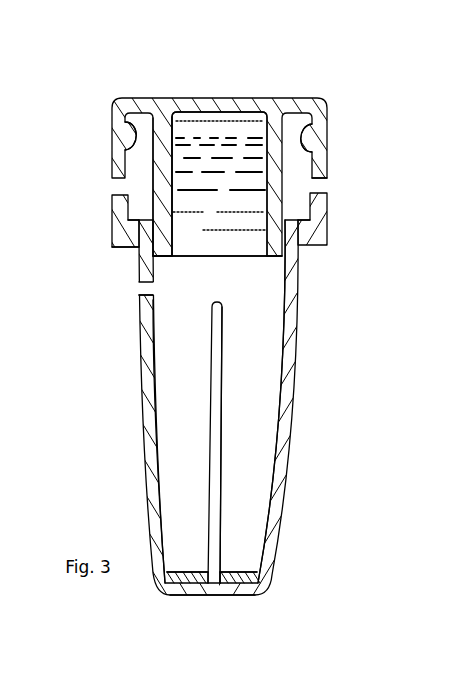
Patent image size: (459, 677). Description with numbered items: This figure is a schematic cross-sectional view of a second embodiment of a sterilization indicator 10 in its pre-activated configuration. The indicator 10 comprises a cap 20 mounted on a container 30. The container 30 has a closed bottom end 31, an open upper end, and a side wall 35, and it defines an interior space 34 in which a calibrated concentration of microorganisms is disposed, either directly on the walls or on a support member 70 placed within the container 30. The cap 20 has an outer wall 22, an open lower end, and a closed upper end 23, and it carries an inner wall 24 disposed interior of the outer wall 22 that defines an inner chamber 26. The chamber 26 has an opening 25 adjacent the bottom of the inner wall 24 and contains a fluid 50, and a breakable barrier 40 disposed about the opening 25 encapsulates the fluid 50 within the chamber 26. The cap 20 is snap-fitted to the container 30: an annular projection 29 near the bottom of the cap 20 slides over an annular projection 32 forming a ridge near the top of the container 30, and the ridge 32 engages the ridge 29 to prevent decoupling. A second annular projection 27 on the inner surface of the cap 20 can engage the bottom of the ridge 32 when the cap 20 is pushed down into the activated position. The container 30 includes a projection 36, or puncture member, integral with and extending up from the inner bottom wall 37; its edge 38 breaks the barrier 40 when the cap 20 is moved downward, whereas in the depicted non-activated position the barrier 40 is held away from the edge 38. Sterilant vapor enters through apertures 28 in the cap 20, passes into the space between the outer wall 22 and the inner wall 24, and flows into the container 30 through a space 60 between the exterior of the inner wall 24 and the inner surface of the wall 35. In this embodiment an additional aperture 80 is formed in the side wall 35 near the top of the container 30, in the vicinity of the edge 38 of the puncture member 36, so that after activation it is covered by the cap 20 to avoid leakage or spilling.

The sterilization indicator system 10 is at (338, 90).
The cap 20 is at (329, 145).
The outer wall 22 is at (113, 214).
The upper end 23 is at (163, 130).
The inner wall 24 is at (137, 145).
The opening 25 is at (130, 304).
The inner chamber 26 is at (219, 126).
The second annular projection 27 is at (300, 125).
The apertures 28 is at (325, 184).
The annular projection 29 is at (133, 248).
The container 30 is at (306, 356).
The bottom end 31 is at (240, 595).
The annular projection 32 is at (130, 227).
The interior space 34 is at (187, 353).
The side wall 35 is at (278, 425).
The projection 36 is at (222, 482).
The inner, bottom wall 37 is at (257, 571).
The edge 38 is at (221, 301).
The breakable barrier 40 is at (243, 257).
The fluid 50 is at (240, 202).
The space 60 is at (158, 267).
The support member 70 is at (237, 571).
The aperture 80 is at (133, 298).